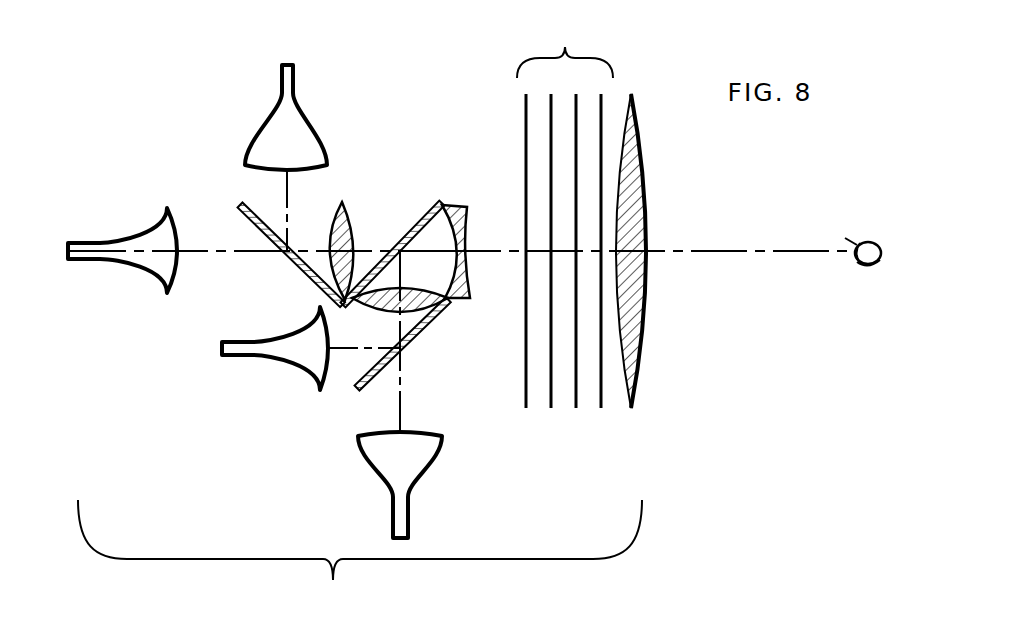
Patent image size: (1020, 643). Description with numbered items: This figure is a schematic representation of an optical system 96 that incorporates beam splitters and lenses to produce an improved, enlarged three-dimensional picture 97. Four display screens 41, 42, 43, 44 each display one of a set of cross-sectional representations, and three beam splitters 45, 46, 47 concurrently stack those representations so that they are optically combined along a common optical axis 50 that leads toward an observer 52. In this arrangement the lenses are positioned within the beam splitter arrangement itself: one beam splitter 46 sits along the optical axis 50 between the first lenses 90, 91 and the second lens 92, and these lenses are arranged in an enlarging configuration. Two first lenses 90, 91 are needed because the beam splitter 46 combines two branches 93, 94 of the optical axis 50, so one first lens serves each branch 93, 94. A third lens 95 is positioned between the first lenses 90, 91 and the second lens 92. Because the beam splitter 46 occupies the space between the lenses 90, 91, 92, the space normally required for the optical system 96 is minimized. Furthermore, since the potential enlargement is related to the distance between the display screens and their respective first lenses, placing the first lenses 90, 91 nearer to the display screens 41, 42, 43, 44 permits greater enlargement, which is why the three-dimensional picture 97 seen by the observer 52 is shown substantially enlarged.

The display screen 41 is at (420, 470).
The display screen 42 is at (290, 368).
The display screen 43 is at (308, 134).
The display screen 44 is at (143, 276).
The beam splitter 45 is at (430, 318).
The beam splitter 46 is at (414, 232).
The beam splitter 47 is at (297, 262).
The optical axis 50 is at (745, 250).
The observer 52 is at (872, 241).
The first lens 90 is at (342, 201).
The first lens 91 is at (406, 292).
The second lens 92 is at (638, 174).
The branch of the optical axis 93 is at (308, 248).
The branch of the optical axis 94 is at (398, 332).
The third lens 95 is at (468, 216).
The optical system 96 is at (360, 554).
The three-dimensional picture 97 is at (565, 214).